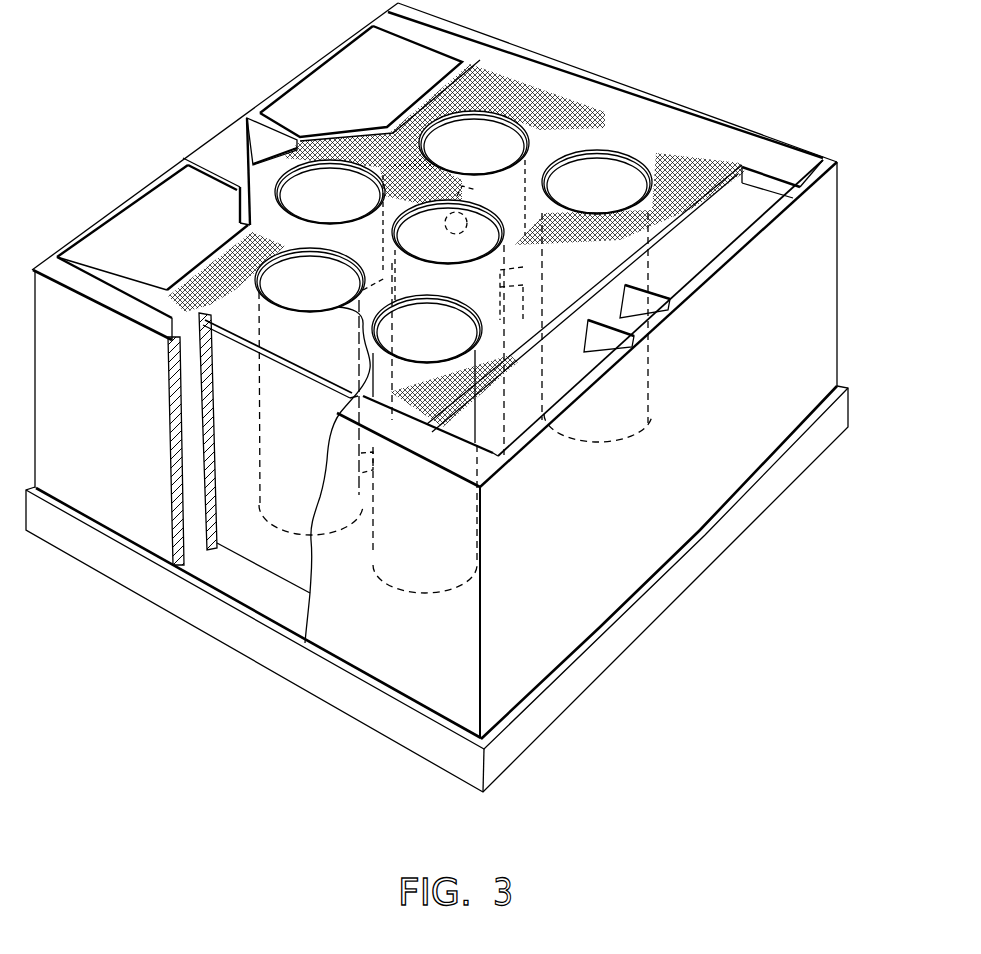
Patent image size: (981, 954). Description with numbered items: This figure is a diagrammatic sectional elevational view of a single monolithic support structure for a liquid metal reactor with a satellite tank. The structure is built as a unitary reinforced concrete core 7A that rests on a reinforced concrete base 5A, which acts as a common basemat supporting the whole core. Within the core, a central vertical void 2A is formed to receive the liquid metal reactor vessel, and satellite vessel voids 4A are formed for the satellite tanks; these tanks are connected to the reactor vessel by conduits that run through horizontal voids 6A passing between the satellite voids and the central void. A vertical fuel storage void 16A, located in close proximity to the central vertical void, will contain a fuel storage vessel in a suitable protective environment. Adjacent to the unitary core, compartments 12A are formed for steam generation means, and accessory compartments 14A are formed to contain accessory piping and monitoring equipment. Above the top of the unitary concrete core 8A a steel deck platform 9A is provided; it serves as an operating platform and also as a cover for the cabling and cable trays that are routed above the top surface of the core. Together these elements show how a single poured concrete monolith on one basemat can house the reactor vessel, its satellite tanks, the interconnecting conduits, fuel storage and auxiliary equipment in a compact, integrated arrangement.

The central vertical void 2A is at (486, 227).
The satellite vessel voids 4A is at (493, 133).
The reinforced concrete base 5A is at (665, 593).
The horizontal voids 6A is at (478, 182).
The unitary reinforced concrete core 7A is at (250, 537).
The top of the unitary concrete core 8A is at (302, 340).
The steel deck platform 9A is at (710, 160).
The compartments for steam generation means 12A is at (330, 92).
The accessory compartments 14A is at (632, 105).
The vertical fuel storage void 16A is at (247, 152).